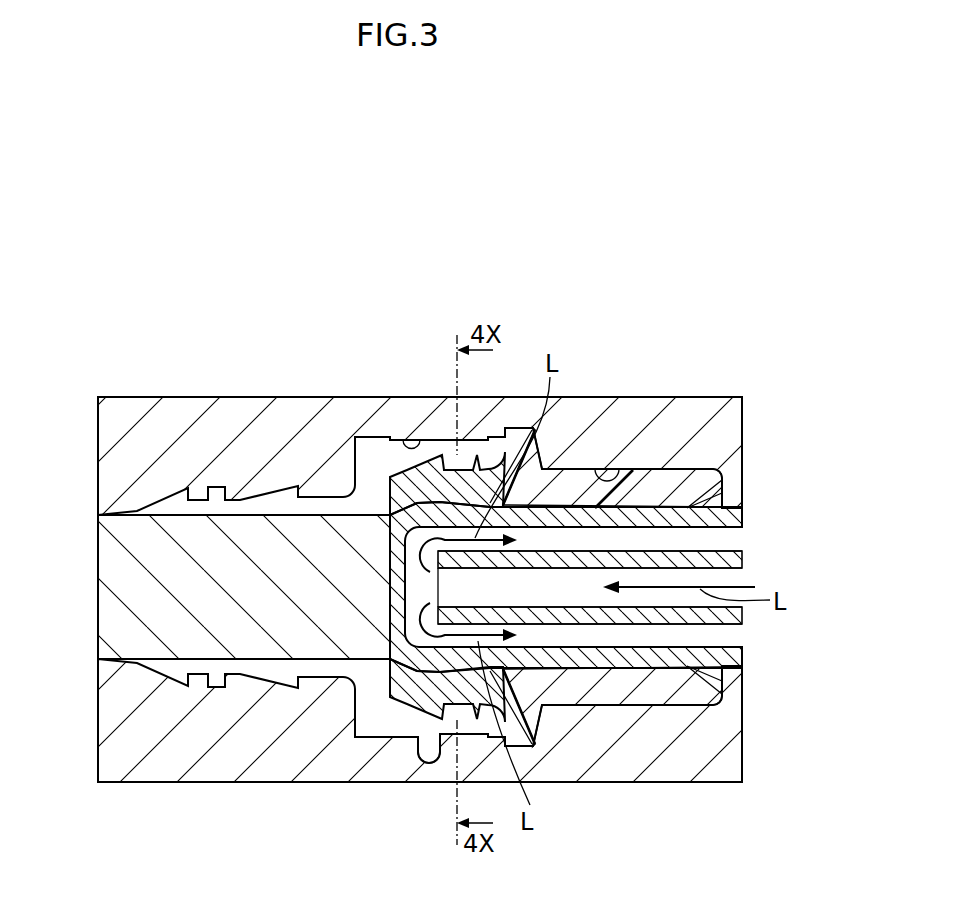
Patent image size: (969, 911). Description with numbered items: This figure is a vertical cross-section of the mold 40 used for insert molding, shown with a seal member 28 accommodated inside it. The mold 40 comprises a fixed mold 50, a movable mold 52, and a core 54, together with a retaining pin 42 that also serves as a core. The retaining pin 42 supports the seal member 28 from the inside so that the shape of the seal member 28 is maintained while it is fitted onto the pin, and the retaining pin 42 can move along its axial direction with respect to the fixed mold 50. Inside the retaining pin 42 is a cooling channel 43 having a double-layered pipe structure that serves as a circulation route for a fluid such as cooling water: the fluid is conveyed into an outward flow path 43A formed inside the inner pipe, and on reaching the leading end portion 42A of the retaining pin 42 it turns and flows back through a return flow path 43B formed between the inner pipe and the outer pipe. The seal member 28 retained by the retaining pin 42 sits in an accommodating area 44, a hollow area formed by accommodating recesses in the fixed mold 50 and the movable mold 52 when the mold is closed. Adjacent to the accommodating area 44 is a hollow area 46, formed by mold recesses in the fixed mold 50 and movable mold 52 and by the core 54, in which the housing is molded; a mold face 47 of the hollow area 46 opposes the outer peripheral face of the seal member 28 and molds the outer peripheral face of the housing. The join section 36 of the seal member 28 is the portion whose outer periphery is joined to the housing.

The seal member 28 is at (647, 466).
The join section 36 is at (426, 756).
The mold 40 is at (660, 330).
The retaining pin 42 is at (746, 558).
The leading end portion 42A is at (386, 592).
The cooling channel 43 is at (710, 840).
The outward flow path 43A is at (660, 597).
The return flow path 43B is at (588, 633).
The accommodating area 44 is at (618, 467).
The hollow area 46 is at (375, 463).
The mold face 47 is at (403, 452).
The fixed mold 50 is at (742, 423).
The movable mold 52 is at (727, 782).
The core 54 is at (98, 594).